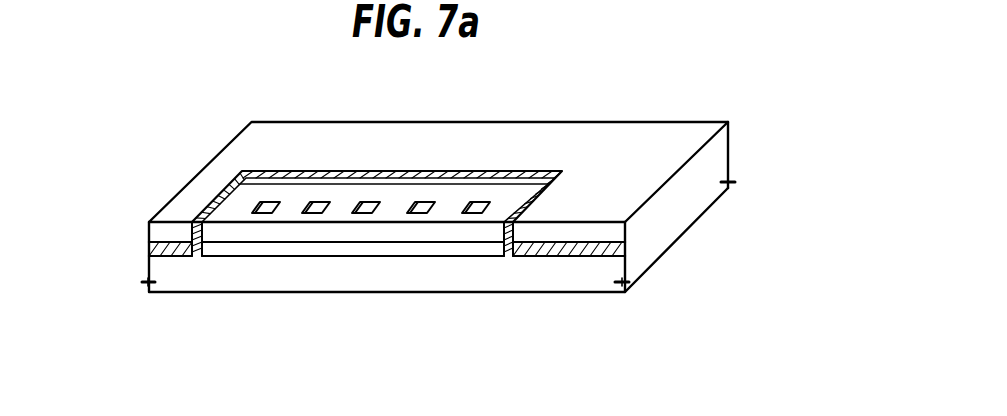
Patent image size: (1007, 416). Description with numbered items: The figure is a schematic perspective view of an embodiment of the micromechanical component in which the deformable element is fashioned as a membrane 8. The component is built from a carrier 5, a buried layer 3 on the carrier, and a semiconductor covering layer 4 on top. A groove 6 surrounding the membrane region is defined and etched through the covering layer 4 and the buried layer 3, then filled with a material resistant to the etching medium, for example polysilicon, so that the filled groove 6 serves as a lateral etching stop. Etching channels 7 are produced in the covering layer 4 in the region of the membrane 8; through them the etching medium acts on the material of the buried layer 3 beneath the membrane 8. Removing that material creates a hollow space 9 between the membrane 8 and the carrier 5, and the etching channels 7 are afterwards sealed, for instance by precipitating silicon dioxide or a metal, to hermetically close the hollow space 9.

The buried layer 3 is at (627, 243).
The covering layer 4 is at (627, 223).
The carrier 5 is at (618, 263).
The groove 6 is at (195, 256).
The etching channels 7 is at (255, 203).
The membrane 8 is at (343, 210).
The hollow space 9 is at (372, 250).